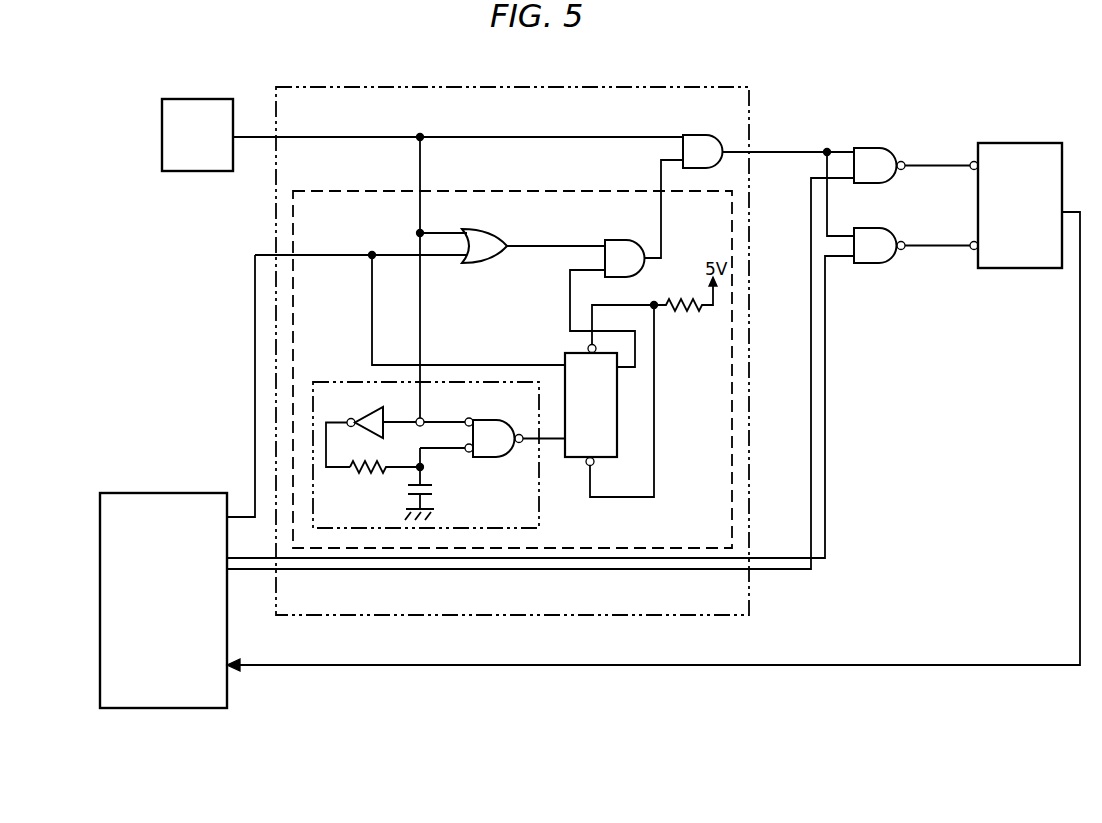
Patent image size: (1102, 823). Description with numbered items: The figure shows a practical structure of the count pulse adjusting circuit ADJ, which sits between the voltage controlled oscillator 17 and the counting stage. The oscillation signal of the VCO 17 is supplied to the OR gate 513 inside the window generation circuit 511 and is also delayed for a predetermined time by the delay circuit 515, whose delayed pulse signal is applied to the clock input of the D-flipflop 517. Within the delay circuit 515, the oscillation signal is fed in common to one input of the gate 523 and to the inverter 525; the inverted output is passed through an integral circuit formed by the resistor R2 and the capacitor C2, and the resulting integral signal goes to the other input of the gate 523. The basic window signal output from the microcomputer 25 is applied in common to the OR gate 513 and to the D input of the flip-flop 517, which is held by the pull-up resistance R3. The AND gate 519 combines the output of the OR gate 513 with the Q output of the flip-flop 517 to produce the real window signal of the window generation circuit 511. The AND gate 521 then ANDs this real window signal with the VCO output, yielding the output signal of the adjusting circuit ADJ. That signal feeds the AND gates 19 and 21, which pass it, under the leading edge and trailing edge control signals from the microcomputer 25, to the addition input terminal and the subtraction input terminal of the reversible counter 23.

The voltage controlled oscillator 17 is at (206, 99).
The AND gate 19 is at (867, 148).
The AND gate 21 is at (871, 264).
The reversible counter 23 is at (1000, 143).
The microcomputer 25 is at (150, 493).
The window generation circuit 511 is at (293, 213).
The OR gate 513 is at (476, 264).
The delay circuit 515 is at (470, 528).
The D-flipflop 517 is at (565, 354).
The AND gate 519 is at (618, 240).
The AND gate 521 is at (690, 135).
The OR gate 523 is at (492, 420).
The inverter 525 is at (374, 409).
The resistor R2 is at (385, 482).
The capacitor C2 is at (428, 493).
The pull-up resistance R3 is at (685, 307).
The count pulse adjusting circuit ADJ is at (648, 87).